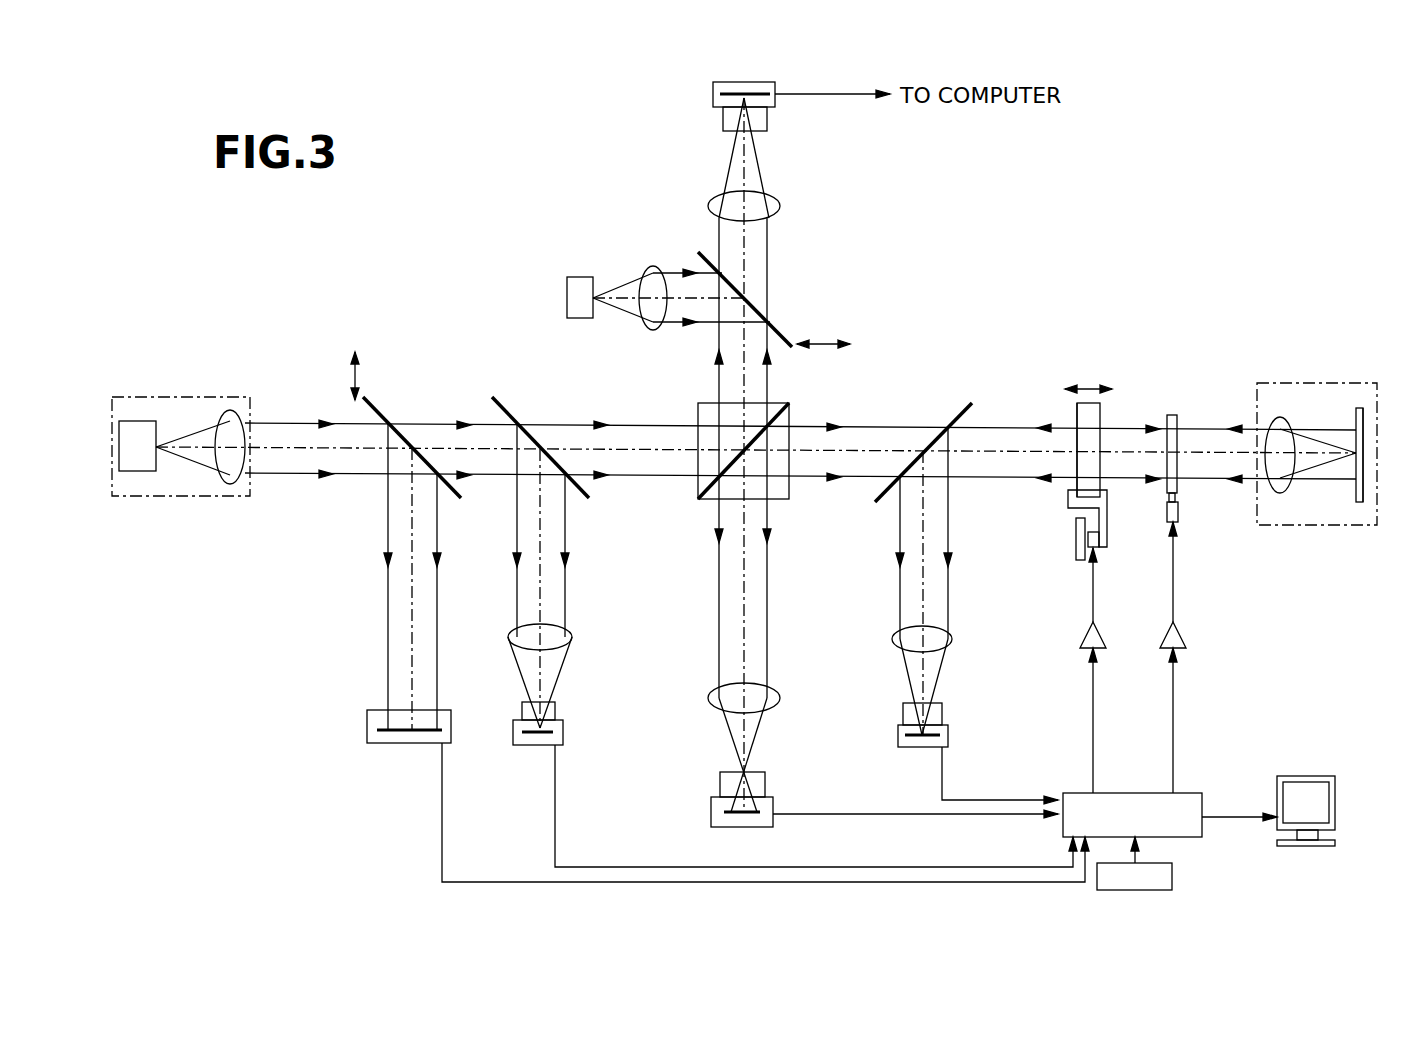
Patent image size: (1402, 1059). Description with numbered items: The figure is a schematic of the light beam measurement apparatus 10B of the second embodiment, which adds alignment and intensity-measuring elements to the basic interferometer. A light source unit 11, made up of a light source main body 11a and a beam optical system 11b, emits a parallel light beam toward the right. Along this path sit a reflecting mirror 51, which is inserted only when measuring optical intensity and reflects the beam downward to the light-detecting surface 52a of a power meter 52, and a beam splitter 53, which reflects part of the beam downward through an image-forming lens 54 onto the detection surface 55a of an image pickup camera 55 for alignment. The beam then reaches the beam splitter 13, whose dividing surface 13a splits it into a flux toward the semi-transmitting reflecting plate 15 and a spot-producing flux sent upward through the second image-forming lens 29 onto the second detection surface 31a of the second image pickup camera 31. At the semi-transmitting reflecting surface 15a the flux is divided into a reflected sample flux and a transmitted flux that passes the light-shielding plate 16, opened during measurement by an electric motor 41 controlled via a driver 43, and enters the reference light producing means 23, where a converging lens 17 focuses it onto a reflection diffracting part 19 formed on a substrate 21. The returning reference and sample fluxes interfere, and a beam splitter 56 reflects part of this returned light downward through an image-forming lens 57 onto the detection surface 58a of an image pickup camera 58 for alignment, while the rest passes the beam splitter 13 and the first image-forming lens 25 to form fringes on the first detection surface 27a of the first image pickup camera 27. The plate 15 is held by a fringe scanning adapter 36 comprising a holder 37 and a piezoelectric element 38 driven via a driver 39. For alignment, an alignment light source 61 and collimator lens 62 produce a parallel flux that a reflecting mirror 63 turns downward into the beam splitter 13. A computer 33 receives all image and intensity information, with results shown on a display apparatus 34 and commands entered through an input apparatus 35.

The light beam measurement apparatus 10B is at (1002, 237).
The light source unit 11 is at (183, 502).
The light source main body 11a is at (135, 421).
The beam optical system 11b is at (236, 411).
The beam splitter 13 is at (788, 405).
The dividing surface 13a is at (698, 498).
The semi-transmitting reflecting plate 15 is at (1101, 416).
The semi-transmitting reflecting surface 15a is at (1077, 418).
The light-shielding plate 16 is at (1177, 415).
The converging lens 17 is at (1283, 419).
The reflection diffracting part 19 is at (1356, 440).
The substrate 21 is at (1356, 490).
The reference light producing means 23 is at (1310, 383).
The first image-forming lens 25 is at (708, 698).
The first image pickup camera 27 is at (711, 810).
The first detection surface 27a is at (748, 816).
The second image-forming lens 29 is at (716, 205).
The second image pickup camera 31 is at (713, 92).
The second detection surface 31a is at (770, 100).
The computer 33 is at (1065, 793).
The display apparatus 34 is at (1335, 800).
The input apparatus 35 is at (1172, 873).
The fringe scanning adapter 36 is at (1066, 542).
The holder 37 is at (1107, 521).
The piezoelectric element 38 is at (1099, 541).
The driver 39 is at (1080, 638).
The electric motor 41 is at (1178, 512).
The driver 43 is at (1184, 638).
The reflecting mirror 51 is at (371, 404).
The power meter 52 is at (375, 710).
The light-detecting surface 52a is at (442, 728).
The beam splitter 53 is at (520, 400).
The image-forming lens for alignment 54 is at (570, 641).
The image pickup camera for alignment 55 is at (513, 741).
The detection surface 55a is at (554, 733).
The beam splitter 56 is at (968, 405).
The image-forming lens for alignment 57 is at (951, 641).
The image pickup camera for alignment 58 is at (898, 731).
The detection surface 58a is at (941, 736).
The alignment light source 61 is at (580, 277).
The collimator lens 62 is at (650, 278).
The reflecting mirror 63 is at (782, 337).